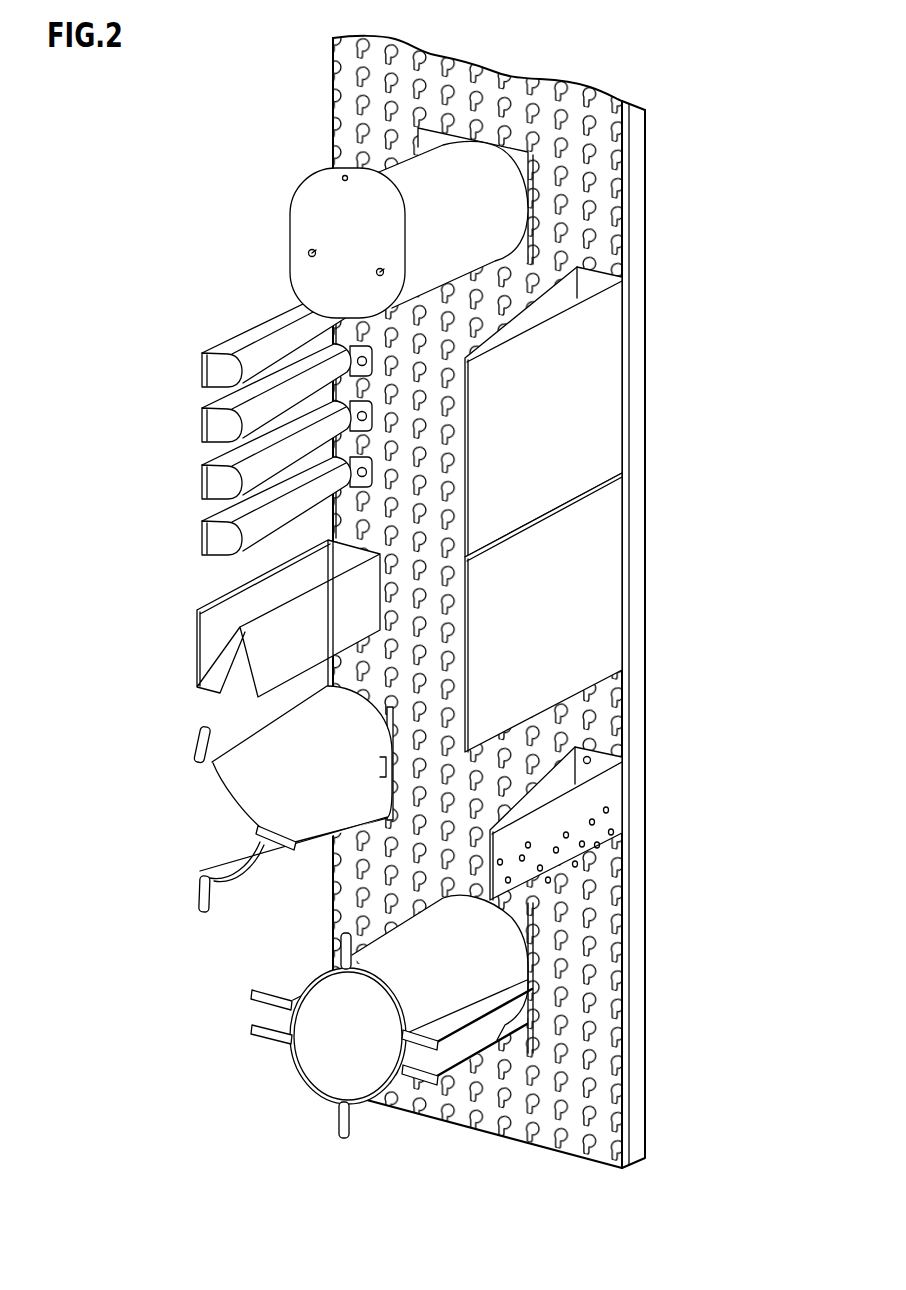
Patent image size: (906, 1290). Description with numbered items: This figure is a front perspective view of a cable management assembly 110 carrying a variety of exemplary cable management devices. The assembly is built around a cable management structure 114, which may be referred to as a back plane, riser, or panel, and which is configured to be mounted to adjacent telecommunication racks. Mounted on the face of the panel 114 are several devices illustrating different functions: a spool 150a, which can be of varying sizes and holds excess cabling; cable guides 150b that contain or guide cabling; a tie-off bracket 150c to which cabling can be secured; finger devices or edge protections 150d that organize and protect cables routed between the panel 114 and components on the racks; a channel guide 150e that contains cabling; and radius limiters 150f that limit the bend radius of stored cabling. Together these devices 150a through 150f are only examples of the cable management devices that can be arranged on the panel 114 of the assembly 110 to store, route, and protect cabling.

The cable management assembly 110 is at (700, 117).
The cable management structure 114 is at (350, 86).
The spool 150a is at (330, 217).
The cable guides 150b is at (568, 408).
The tie-off brackets 150c is at (605, 797).
The finger devices or edge protections 150d is at (222, 433).
The channel guides 150e is at (212, 648).
The radius limiters 150f is at (232, 780).